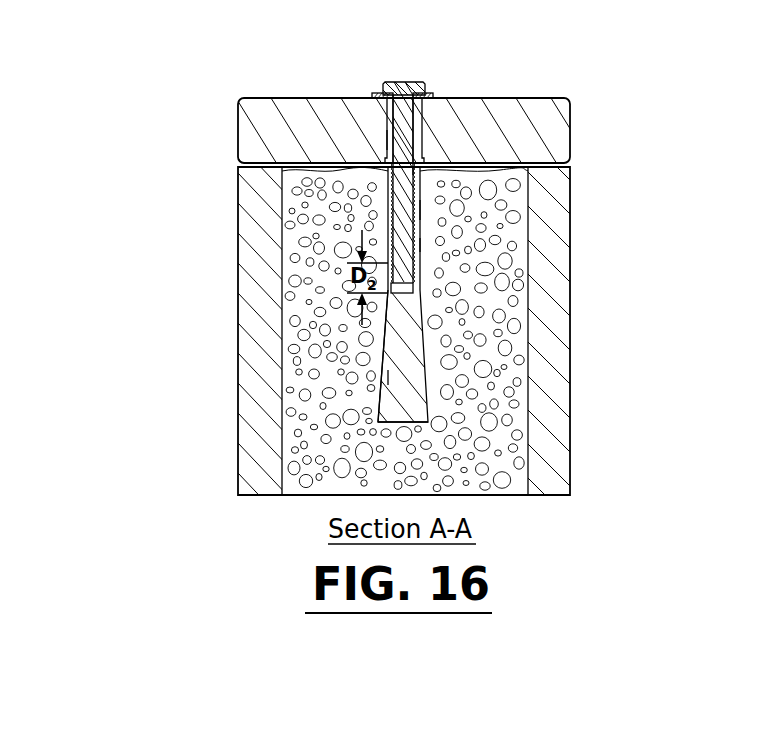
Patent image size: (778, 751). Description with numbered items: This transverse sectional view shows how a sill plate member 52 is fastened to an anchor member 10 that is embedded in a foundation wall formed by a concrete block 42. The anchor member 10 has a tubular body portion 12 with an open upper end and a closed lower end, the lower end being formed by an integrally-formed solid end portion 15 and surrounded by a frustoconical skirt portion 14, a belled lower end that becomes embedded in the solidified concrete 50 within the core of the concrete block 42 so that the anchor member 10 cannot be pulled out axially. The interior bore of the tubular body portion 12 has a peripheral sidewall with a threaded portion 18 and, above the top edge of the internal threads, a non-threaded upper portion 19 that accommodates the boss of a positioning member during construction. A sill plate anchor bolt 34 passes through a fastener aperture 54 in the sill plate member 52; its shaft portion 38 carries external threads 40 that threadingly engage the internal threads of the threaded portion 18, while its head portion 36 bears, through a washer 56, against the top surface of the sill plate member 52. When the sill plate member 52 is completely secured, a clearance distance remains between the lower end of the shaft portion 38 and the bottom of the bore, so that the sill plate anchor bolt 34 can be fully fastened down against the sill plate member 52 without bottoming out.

The anchor member 10 is at (374, 377).
The tubular body portion 12 is at (420, 245).
The frustoconical skirt portion 14 is at (392, 388).
The solid end portion 15 is at (412, 406).
The threaded portion 18 is at (400, 272).
The non-threaded upper portion 19 is at (418, 170).
The sill plate anchor bolt 34 is at (430, 210).
The head portion 36 is at (403, 90).
The shaft portion 38 is at (398, 117).
The external threads 40 is at (390, 142).
The concrete block 42 is at (557, 184).
The concrete 50 is at (488, 463).
The sill plate member 52 is at (308, 128).
The fastener aperture 54 is at (388, 137).
The washer 56 is at (373, 95).